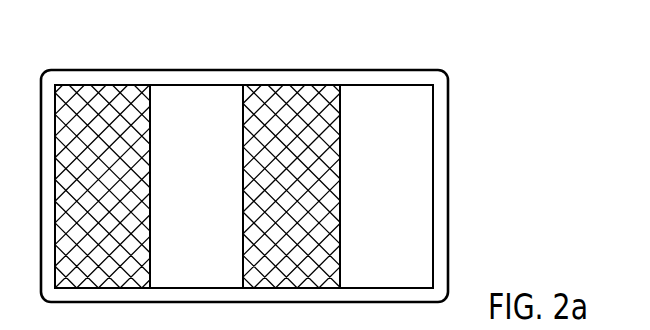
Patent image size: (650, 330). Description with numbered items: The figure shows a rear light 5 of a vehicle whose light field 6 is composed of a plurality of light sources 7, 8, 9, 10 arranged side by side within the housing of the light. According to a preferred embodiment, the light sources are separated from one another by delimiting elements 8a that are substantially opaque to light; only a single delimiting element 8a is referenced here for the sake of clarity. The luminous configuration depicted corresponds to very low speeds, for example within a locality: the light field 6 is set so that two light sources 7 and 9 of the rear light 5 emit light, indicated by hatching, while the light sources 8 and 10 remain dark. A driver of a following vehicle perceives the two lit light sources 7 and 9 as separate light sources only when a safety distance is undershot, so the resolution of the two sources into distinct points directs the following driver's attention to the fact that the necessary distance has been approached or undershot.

The rear light 5 is at (433, 212).
The light field 6 is at (388, 153).
The light source 7 is at (136, 93).
The light source 8 is at (225, 93).
The delimiting element 8a is at (149, 126).
The light source 9 is at (317, 93).
The light source 10 is at (407, 97).